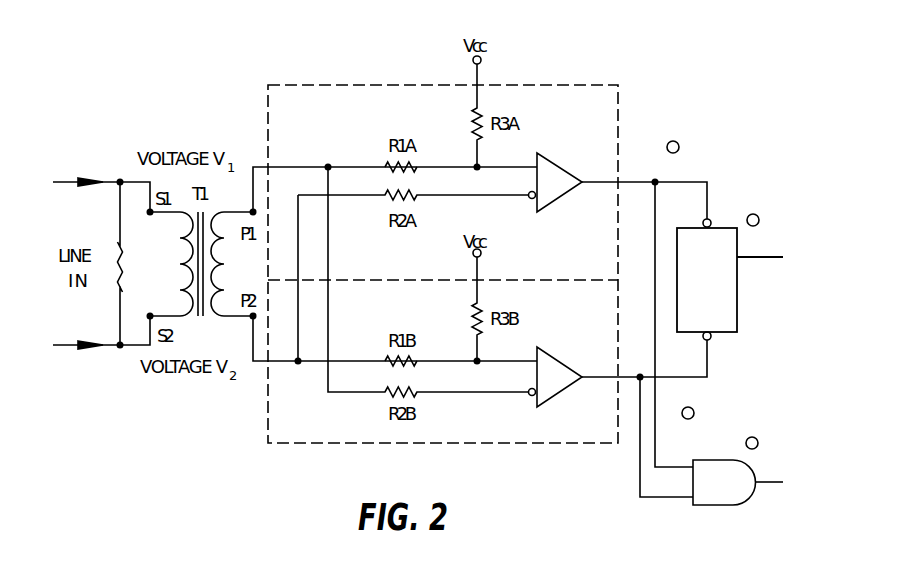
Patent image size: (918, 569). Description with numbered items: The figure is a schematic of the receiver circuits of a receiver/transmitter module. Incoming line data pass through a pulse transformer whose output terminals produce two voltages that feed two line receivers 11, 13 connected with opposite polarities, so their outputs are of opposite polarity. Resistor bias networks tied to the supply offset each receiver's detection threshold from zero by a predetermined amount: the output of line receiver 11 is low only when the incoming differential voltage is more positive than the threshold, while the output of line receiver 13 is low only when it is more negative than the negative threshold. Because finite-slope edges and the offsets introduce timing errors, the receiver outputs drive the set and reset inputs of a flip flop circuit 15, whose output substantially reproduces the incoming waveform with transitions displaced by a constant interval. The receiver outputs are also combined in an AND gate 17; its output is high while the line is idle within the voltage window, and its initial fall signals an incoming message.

The line receiver 11 is at (552, 199).
The line receiver 13 is at (552, 394).
The flip flop circuit 15 is at (737, 312).
The AND gate 17 is at (716, 505).